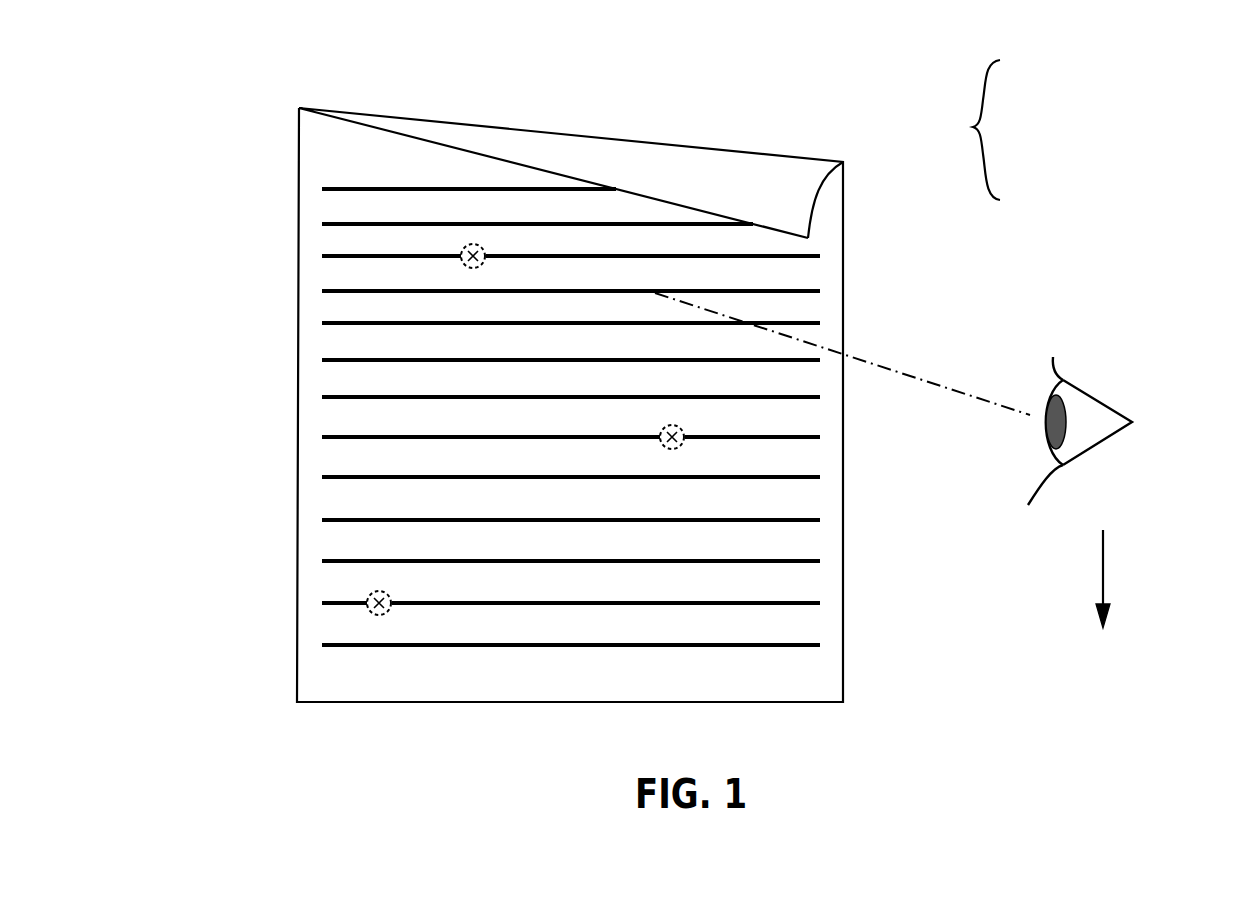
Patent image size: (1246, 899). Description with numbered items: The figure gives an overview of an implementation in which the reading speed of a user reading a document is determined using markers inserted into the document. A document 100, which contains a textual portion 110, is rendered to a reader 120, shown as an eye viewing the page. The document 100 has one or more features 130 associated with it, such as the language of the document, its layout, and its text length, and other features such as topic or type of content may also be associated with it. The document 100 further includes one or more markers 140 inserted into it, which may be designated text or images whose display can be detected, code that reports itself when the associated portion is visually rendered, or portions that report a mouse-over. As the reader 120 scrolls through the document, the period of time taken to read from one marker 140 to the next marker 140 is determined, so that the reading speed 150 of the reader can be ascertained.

The document 100 is at (617, 124).
The textual portion 110 is at (795, 561).
The reader 120 is at (1113, 338).
The features 130 is at (848, 195).
The markers 140 is at (630, 447).
The reading speed 150 is at (1128, 651).